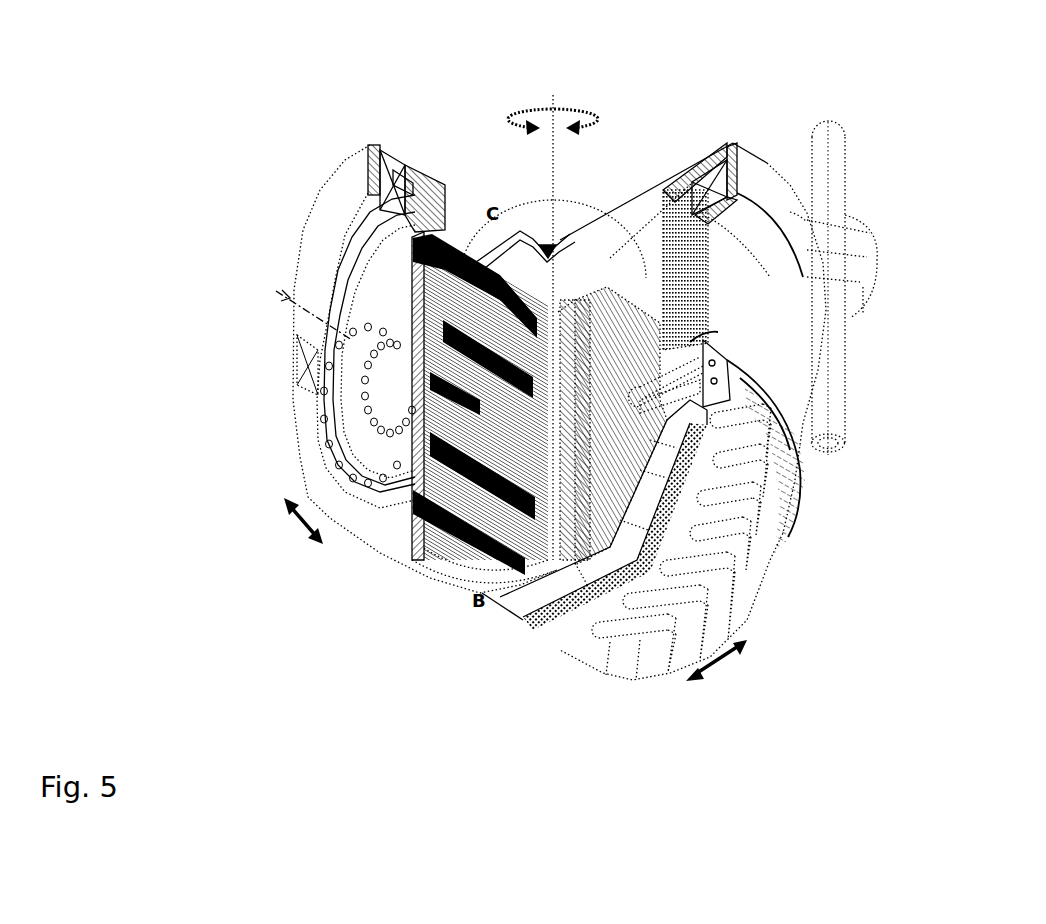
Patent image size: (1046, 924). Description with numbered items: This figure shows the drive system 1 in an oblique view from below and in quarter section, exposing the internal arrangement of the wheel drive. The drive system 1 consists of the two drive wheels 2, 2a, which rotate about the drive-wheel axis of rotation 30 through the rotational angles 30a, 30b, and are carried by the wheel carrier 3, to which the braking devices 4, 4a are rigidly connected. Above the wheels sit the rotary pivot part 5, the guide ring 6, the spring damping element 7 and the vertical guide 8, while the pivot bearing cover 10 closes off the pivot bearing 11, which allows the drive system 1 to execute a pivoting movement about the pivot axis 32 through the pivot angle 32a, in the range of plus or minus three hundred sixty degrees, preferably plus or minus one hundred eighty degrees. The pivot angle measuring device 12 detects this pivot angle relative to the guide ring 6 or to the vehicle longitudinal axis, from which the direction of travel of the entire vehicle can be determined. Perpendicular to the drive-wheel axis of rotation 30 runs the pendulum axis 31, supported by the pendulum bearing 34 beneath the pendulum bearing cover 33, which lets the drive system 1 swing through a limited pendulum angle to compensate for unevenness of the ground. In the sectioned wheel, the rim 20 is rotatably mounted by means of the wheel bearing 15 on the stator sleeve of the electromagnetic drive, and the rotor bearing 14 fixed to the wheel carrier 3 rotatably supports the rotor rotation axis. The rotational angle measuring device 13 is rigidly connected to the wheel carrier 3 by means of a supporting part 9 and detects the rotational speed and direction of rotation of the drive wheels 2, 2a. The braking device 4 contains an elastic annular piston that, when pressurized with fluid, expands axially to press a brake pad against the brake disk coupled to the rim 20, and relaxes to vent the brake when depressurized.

The drive system 1 is at (205, 240).
The drive wheel 2 is at (318, 495).
The drive wheel 2a is at (790, 522).
The wheel carrier 3 is at (525, 628).
The braking device 4 is at (480, 575).
The braking device 4a is at (555, 590).
The rotary pivot part 5 is at (730, 295).
The guide ring 6 is at (790, 218).
The spring damping element 7 is at (852, 235).
The vertical guide 8 is at (833, 143).
The supporting part 9 is at (455, 562).
The pivot bearing cover 10 is at (355, 228).
The pivot bearing 11 is at (385, 165).
The pivot angle measuring device 12 is at (508, 207).
The rotational angle measuring device 13 is at (412, 380).
The rotor bearing 14 is at (800, 565).
The wheel bearing 15 is at (415, 548).
The rim 20 is at (437, 512).
The drive-wheel axis of rotation 30 is at (288, 297).
The rotational angle 30a is at (300, 528).
The rotational angle 30b is at (723, 661).
The pendulum axis 31 is at (740, 350).
The pivot axis 32 is at (552, 98).
The pivot angle 32a is at (578, 110).
The pendulum bearing cover 33 is at (745, 385).
The pendulum bearing 34 is at (838, 437).